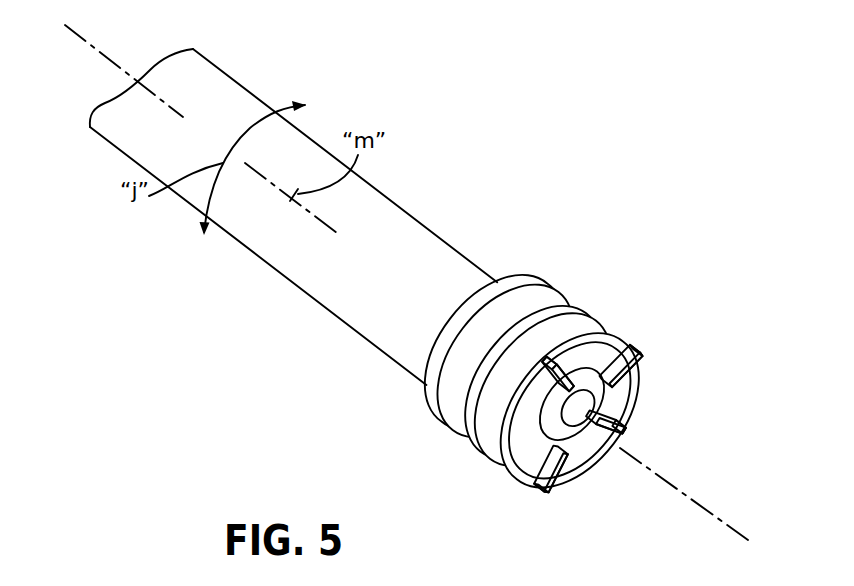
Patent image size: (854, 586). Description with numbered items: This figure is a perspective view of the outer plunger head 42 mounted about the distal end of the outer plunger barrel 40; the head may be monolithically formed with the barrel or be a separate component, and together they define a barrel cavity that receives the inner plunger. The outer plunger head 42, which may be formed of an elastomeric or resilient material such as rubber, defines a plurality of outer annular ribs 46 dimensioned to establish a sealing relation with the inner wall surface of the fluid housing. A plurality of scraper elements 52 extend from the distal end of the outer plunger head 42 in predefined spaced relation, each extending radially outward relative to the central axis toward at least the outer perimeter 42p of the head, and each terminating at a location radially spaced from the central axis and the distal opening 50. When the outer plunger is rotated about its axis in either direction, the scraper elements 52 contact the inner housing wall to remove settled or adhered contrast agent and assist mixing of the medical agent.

The outer plunger barrel 40 is at (212, 88).
The outer plunger head 42 is at (463, 442).
The outer perimeter 42p is at (607, 328).
The outer annular ribs 46 is at (560, 300).
The distal opening 50 is at (571, 412).
The scraper elements 52 is at (637, 348).